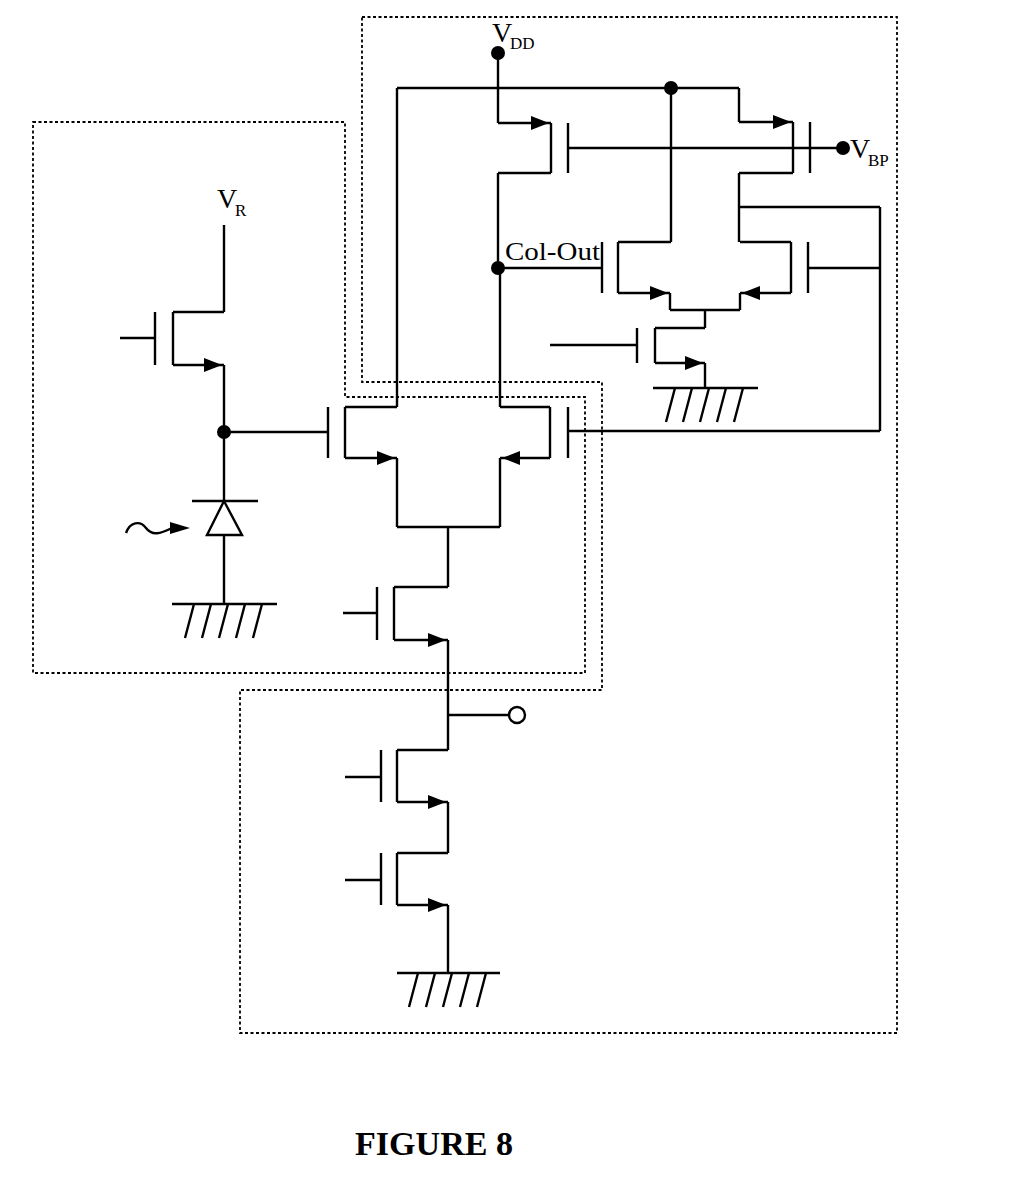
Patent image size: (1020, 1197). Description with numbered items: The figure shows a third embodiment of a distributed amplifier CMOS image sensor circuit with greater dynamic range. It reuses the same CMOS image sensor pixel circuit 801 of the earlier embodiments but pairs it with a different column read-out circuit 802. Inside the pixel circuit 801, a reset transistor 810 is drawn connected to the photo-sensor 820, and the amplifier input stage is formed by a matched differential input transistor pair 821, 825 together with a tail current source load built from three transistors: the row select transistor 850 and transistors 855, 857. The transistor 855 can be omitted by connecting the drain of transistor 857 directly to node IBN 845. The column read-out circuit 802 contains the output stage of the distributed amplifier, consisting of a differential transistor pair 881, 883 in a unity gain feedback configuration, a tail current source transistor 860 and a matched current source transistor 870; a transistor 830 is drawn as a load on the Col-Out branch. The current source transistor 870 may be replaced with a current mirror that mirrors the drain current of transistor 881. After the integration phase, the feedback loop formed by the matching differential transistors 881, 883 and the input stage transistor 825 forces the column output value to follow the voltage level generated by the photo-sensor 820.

The CMOS image sensor pixel circuit 801 is at (309, 397).
The column read-out circuit 802 is at (568, 525).
The reset transistor 810 is at (155, 372).
The photo-sensor 820 is at (217, 535).
The differential input transistor 821 is at (323, 307).
The differential input transistor 825 is at (676, 367).
The transistor 830 is at (670, 178).
The node IBN 845 is at (531, 718).
The row select transistor 850 is at (392, 666).
The transistor 855 is at (387, 801).
The transistor 857 is at (392, 930).
The tail current source transistor 860 is at (654, 375).
The matched current source transistor 870 is at (809, 162).
The differential transistor 881 is at (584, 207).
The differential transistor 883 is at (810, 284).